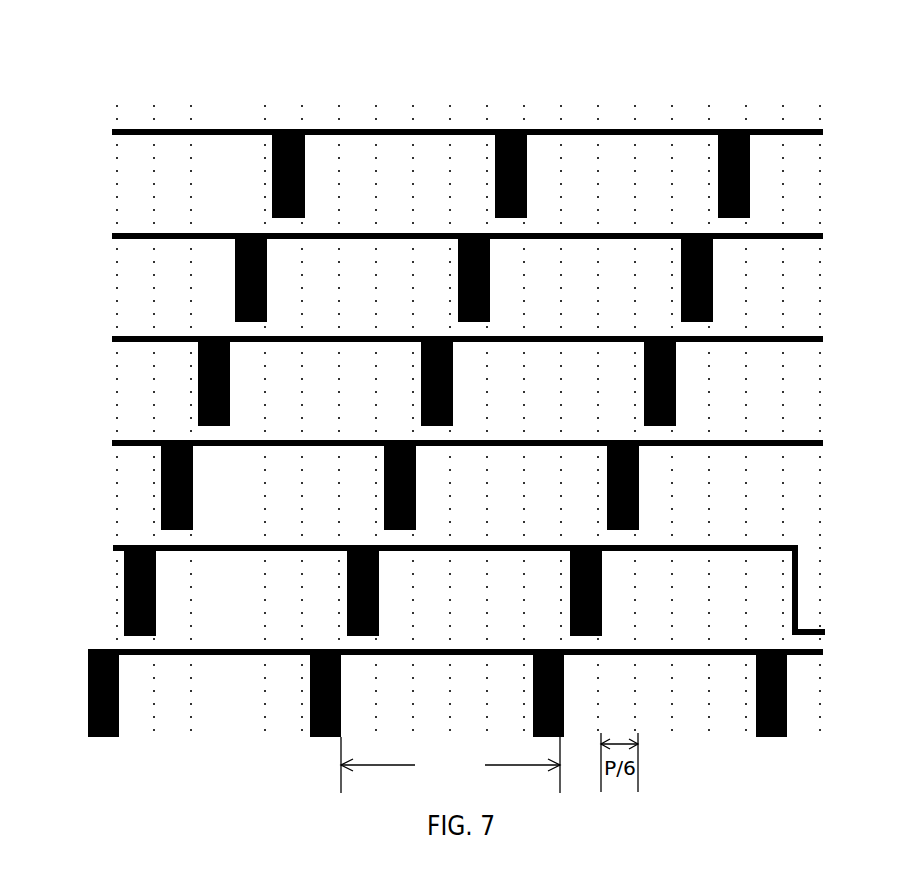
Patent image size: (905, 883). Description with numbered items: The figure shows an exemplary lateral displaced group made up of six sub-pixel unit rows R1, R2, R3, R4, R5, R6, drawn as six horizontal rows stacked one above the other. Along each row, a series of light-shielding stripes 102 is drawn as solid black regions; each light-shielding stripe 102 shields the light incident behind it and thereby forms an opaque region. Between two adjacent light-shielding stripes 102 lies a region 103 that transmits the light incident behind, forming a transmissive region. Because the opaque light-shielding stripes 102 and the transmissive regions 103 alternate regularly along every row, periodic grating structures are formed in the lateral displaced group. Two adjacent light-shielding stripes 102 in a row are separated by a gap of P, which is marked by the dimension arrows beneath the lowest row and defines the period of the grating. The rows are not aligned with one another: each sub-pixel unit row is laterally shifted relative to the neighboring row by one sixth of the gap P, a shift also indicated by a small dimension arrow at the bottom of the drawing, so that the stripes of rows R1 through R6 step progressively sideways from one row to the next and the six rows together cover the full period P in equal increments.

The light-shielding stripe 102 is at (307, 132).
The region between two adjacent light-shielding stripes 103 is at (412, 158).
The sub-pixel unit row R1 is at (429, 123).
The sub-pixel unit row R2 is at (429, 275).
The sub-pixel unit row R3 is at (429, 378).
The sub-pixel unit row R4 is at (429, 482).
The sub-pixel unit row R5 is at (430, 588).
The sub-pixel unit row R6 is at (429, 691).
The gap between two adjacent light-shielding stripes P is at (450, 765).